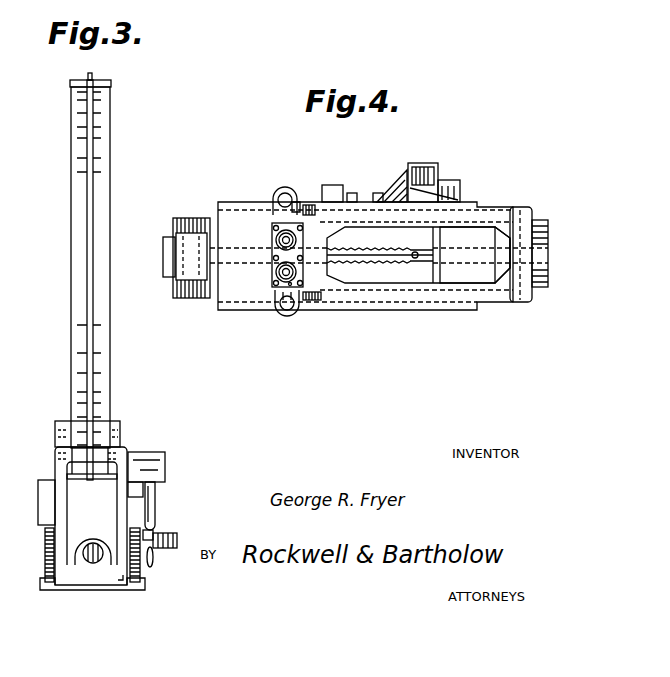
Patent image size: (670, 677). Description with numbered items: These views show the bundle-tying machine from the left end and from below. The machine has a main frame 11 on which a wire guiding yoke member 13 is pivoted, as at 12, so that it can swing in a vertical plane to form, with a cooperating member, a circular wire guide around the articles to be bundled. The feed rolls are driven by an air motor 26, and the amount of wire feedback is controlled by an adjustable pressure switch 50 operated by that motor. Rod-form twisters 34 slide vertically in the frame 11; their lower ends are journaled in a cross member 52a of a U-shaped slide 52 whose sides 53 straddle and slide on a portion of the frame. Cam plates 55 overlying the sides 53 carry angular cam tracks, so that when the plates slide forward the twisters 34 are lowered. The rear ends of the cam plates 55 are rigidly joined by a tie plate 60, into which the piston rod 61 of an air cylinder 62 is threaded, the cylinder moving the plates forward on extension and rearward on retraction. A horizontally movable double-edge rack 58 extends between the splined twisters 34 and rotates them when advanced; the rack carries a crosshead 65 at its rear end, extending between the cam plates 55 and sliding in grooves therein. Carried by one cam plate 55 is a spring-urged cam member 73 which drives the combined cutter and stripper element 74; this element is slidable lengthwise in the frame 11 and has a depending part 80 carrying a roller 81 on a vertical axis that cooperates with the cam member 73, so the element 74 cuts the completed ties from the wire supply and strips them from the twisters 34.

In FIG. 3, the main frame 11 is at (42, 587).
In FIG. 4, the main frame 11 is at (462, 208).
In FIG. 4, the pivot 12 is at (187, 238).
In FIG. 3, the wire guiding yoke member 13 is at (82, 299).
In FIG. 4, the wire guiding yoke member 13 is at (172, 245).
In FIG. 3, the air motor 26 is at (168, 478).
In FIG. 4, the air motor 26 is at (437, 172).
In FIG. 4, the twisters 34 is at (282, 237).
In FIG. 4, the adjustable pressure switch 50 is at (336, 186).
In FIG. 4, the slide 52 is at (286, 292).
In FIG. 4, the cross member 52a is at (291, 286).
In FIG. 4, the sides 53 is at (277, 216).
In FIG. 3, the cam plates 55 is at (46, 553).
In FIG. 4, the cam plates 55 is at (310, 208).
In FIG. 3, the double-edge rack 58 is at (93, 557).
In FIG. 4, the double-edge rack 58 is at (382, 258).
In FIG. 4, the tie plate 60 is at (500, 236).
In FIG. 4, the piston rod 61 is at (522, 302).
In FIG. 4, the air cylinder 62 is at (540, 220).
In FIG. 4, the crosshead 65 is at (437, 255).
In FIG. 3, the cam member 73 is at (170, 555).
In FIG. 4, the cam member 73 is at (398, 192).
In FIG. 3, the combined cutter and stripper element 74 is at (130, 505).
In FIG. 4, the combined cutter and stripper element 74 is at (299, 184).
In FIG. 3, the depending part 80 is at (153, 492).
In FIG. 3, the roller 81 is at (157, 533).